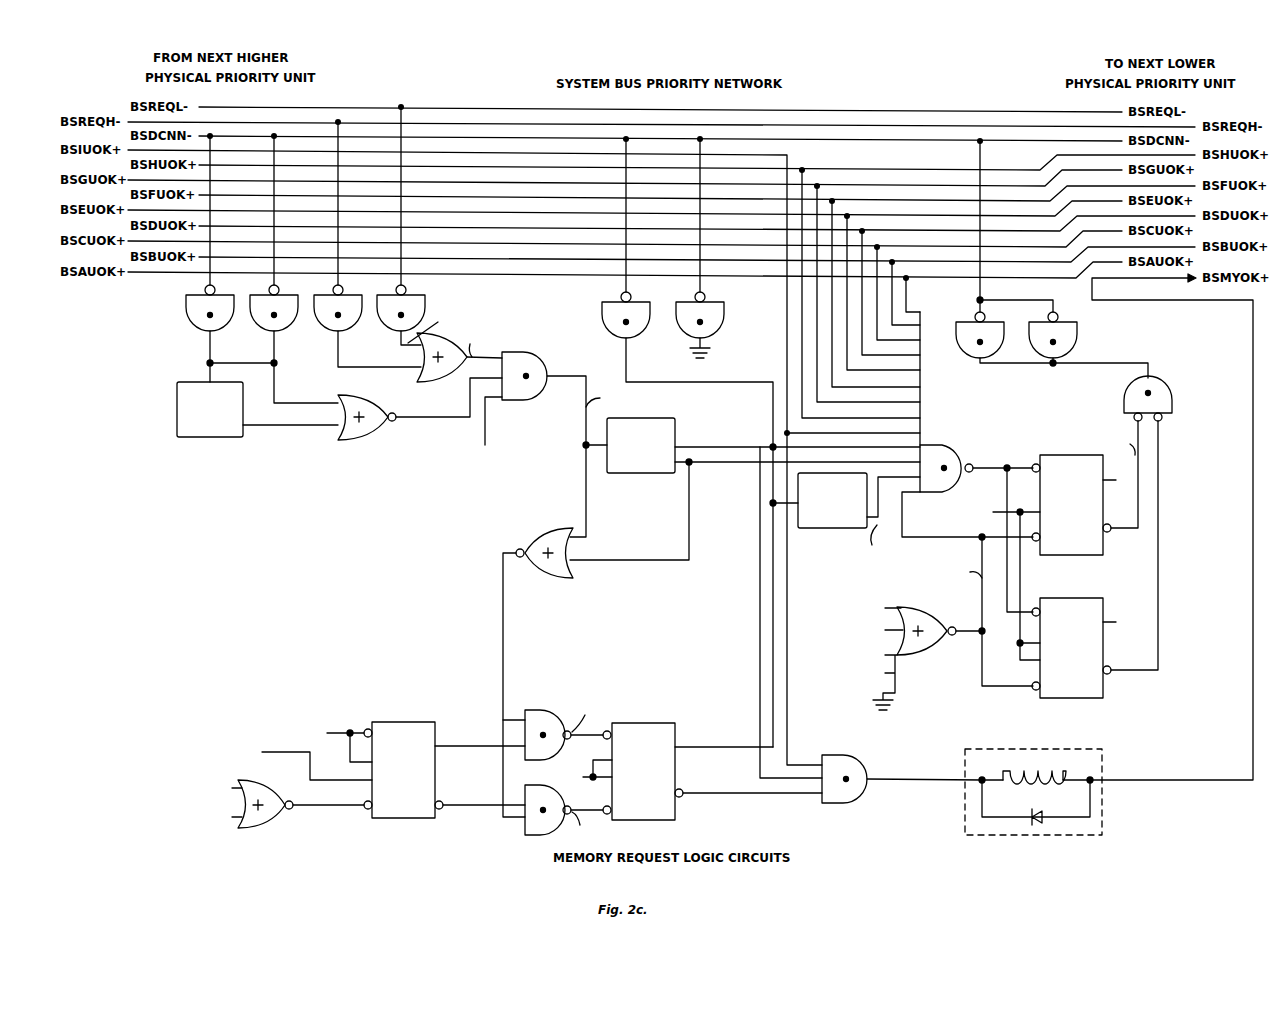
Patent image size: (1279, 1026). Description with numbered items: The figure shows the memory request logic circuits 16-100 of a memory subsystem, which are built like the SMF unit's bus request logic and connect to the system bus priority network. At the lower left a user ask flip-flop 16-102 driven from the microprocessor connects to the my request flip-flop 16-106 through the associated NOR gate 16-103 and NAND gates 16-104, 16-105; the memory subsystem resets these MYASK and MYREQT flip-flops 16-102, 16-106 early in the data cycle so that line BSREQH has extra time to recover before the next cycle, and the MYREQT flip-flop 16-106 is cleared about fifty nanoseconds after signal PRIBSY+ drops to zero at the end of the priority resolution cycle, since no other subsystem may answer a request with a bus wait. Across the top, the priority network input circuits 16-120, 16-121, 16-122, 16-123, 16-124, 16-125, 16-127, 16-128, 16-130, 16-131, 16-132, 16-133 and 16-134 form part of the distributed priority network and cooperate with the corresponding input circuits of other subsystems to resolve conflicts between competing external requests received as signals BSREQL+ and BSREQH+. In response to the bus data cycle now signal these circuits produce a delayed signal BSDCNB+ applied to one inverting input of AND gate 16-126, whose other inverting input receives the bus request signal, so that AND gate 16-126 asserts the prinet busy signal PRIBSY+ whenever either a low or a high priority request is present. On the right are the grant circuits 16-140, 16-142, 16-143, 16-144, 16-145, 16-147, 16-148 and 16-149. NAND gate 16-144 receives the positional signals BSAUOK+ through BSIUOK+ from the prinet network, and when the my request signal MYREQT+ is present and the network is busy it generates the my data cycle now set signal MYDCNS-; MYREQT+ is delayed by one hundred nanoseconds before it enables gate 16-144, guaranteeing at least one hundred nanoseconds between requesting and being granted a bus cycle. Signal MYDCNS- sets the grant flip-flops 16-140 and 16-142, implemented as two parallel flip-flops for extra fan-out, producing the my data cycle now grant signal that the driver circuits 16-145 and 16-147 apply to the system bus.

The memory request logic circuits 16-100 is at (252, 537).
The user ask flip-flop 16-102 is at (403, 722).
The NOR gate 16-103 is at (272, 824).
The NAND gate 16-104 is at (540, 710).
The NAND gate 16-105 is at (520, 822).
The my request flip-flop 16-106 is at (655, 723).
The priority network input circuit 16-120 is at (217, 438).
The priority network input circuit 16-121 is at (185, 305).
The priority network input circuit 16-122 is at (272, 331).
The priority network input circuit 16-123 is at (337, 331).
The priority network input circuit 16-124 is at (423, 300).
The priority network input circuit 16-125 is at (450, 382).
The AND gate 16-126 is at (538, 358).
The priority network input circuit 16-127 is at (360, 440).
The priority network input circuit 16-128 is at (668, 418).
The priority network input circuit 16-130 is at (712, 302).
The priority network input circuit 16-131 is at (610, 302).
The priority network input circuit 16-132 is at (840, 755).
The priority network input circuit 16-133 is at (545, 528).
The priority network input circuit 16-134 is at (1040, 748).
The grant flip-flop 16-140 is at (1078, 555).
The grant flip-flop 16-142 is at (1074, 598).
The grant circuit 16-143 is at (840, 528).
The NAND gate 16-144 is at (940, 445).
The driver circuit 16-145 is at (1078, 328).
The driver circuit 16-147 is at (968, 310).
The grant circuit 16-148 is at (930, 605).
The grant circuit 16-149 is at (1163, 385).